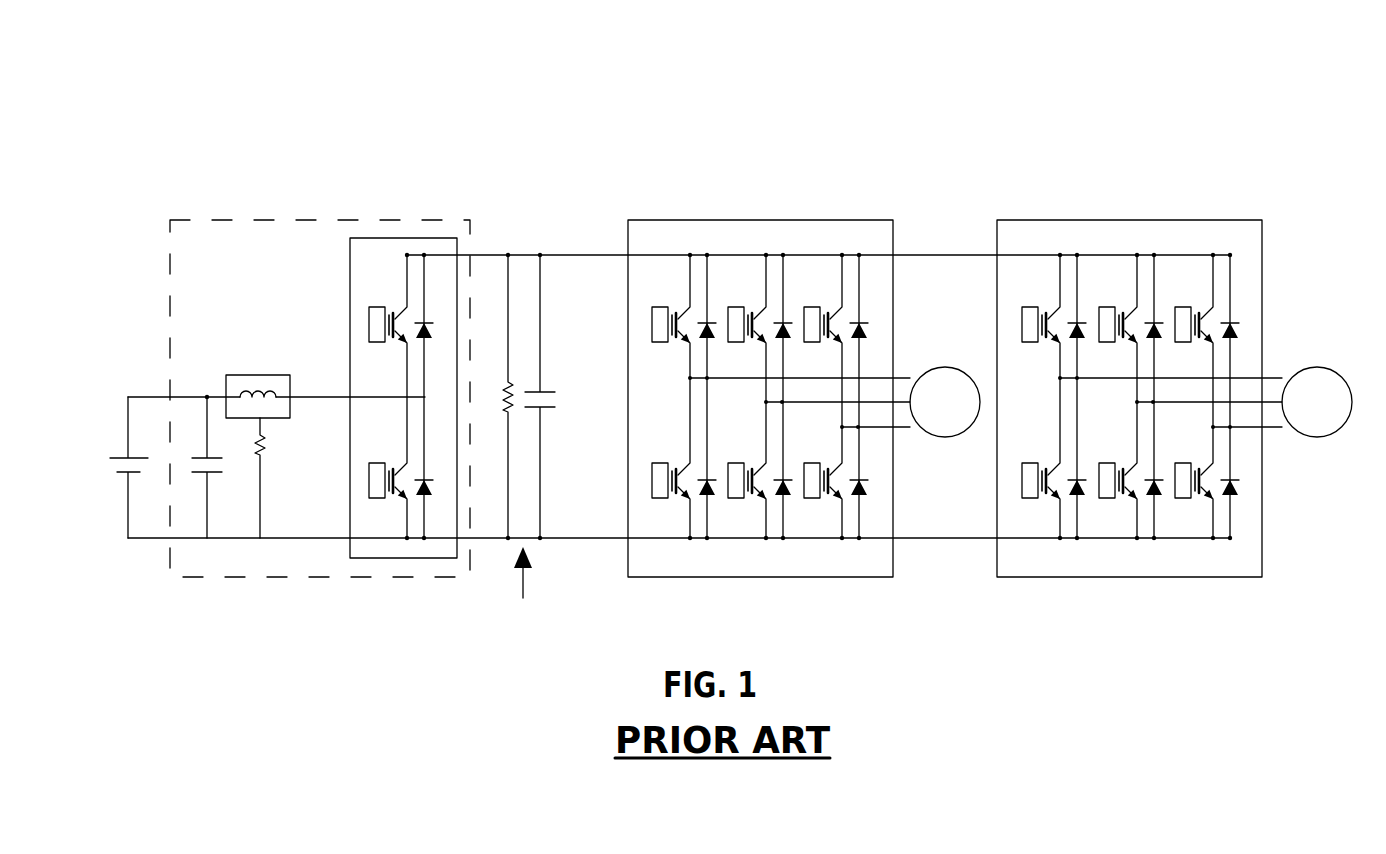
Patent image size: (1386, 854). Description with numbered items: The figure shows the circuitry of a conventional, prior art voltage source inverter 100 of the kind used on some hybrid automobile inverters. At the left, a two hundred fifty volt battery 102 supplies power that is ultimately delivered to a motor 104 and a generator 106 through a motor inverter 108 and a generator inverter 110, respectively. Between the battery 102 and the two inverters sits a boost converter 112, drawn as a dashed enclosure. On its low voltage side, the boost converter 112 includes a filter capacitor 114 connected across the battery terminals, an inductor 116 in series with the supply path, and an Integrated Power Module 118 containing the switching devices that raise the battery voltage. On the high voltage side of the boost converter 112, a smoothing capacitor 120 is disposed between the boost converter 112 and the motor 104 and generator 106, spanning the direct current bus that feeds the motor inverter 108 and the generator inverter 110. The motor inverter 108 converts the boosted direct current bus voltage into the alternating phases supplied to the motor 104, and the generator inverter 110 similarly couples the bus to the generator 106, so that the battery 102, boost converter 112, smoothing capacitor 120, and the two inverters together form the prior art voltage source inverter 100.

The voltage source inverter 100 is at (1250, 80).
The battery 102 is at (113, 458).
The motor 104 is at (958, 370).
The generator 106 is at (1345, 378).
The motor inverter 108 is at (832, 220).
The generator inverter 110 is at (1197, 220).
The boost converter 112 is at (300, 220).
The filter capacitor 114 is at (213, 477).
The inductor 116 is at (289, 375).
The Integrated Power Module 118 is at (413, 238).
The smoothing capacitor 120 is at (553, 393).